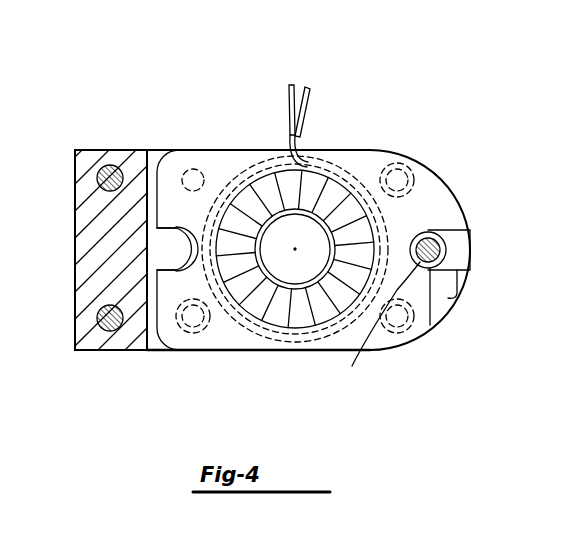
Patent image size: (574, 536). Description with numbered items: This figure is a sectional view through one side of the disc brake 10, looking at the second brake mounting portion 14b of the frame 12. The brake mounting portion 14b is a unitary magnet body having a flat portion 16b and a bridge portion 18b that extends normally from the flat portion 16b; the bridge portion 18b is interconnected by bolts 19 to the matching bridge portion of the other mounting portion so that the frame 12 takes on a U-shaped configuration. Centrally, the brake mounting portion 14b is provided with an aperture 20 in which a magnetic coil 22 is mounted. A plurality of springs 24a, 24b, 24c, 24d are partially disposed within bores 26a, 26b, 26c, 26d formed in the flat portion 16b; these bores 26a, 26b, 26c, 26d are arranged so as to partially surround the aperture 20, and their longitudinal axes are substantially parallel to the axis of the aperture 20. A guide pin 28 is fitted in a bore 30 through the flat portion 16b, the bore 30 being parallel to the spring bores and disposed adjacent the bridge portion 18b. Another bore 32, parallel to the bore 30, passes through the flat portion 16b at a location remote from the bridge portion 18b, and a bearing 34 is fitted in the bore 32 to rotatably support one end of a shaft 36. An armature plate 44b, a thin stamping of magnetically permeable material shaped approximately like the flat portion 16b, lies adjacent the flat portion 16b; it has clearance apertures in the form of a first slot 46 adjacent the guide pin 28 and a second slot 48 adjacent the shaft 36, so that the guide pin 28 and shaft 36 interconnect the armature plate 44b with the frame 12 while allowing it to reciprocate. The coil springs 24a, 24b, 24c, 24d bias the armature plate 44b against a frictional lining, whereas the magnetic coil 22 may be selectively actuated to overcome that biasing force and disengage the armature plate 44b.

The disc brake 10 is at (17, 81).
The frame 12 is at (476, 253).
The second brake mounting portion 14b is at (463, 247).
The flat portion 16b is at (150, 350).
The bridge portion 18b is at (100, 352).
The bolts 19 is at (100, 178).
The aperture 20 is at (337, 152).
The magnetic coil 22 is at (365, 180).
The spring 24a is at (200, 333).
The spring 24b is at (412, 326).
The spring 24c is at (215, 175).
The spring 24d is at (412, 178).
The bore 26a is at (186, 330).
The bore 26b is at (386, 330).
The bore 26c is at (189, 165).
The bore 26d is at (405, 170).
The guide pin 28 is at (165, 254).
The bore 30 is at (162, 266).
The bore 32 is at (372, 323).
The bearing 34 is at (431, 320).
The shaft 36 is at (433, 232).
The armature plate 44b is at (233, 337).
The first slot 46 is at (162, 247).
The second slot 48 is at (461, 296).